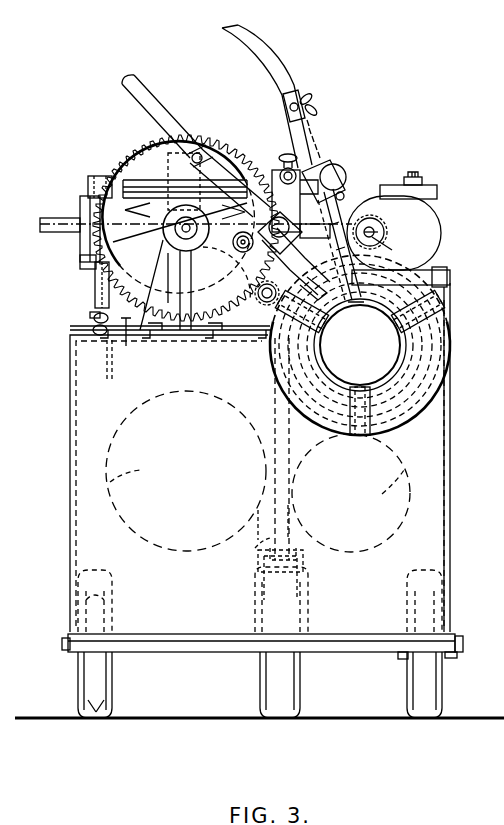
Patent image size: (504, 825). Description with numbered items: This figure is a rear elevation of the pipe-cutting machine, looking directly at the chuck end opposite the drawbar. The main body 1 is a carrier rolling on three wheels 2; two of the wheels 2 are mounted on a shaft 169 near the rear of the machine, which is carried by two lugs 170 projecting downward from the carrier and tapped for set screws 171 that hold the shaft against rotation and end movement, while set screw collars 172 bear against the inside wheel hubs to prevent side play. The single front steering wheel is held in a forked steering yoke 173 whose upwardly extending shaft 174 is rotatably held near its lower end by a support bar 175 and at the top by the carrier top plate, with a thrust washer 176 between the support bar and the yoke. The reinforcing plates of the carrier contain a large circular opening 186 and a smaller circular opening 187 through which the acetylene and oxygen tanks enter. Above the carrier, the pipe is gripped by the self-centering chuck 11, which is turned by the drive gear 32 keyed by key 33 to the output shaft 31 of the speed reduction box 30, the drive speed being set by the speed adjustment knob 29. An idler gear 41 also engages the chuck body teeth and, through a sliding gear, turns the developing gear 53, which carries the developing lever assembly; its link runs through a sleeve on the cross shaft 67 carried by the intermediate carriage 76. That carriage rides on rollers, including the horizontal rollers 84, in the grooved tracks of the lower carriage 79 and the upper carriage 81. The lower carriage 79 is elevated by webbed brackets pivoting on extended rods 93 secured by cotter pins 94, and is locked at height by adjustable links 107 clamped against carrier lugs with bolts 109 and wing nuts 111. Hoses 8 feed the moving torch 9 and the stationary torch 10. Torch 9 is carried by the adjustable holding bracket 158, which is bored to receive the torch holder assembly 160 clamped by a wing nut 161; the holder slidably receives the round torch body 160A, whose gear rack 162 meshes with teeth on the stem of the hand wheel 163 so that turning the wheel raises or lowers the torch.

The main body 1 is at (450, 500).
The wheels 2 is at (112, 704).
The hoses 8 is at (165, 96).
The moving torch 9 is at (344, 192).
The stationary torch 10 is at (294, 233).
The self-centering chuck 11 is at (430, 396).
The speed adjustment knob 29 is at (412, 177).
The speed reduction box 30 is at (437, 202).
The output shaft 31 is at (392, 247).
The drive gear 32 is at (376, 222).
The key 33 is at (378, 232).
The idler gear 41 is at (256, 306).
The developing gear 53 is at (118, 160).
The cross shaft 67 is at (52, 232).
The intermediate carriage 76 is at (80, 210).
The lower carriage 79 is at (95, 280).
The upper carriage 81 is at (94, 176).
The rollers 84 is at (80, 257).
The extended rods 93 is at (94, 330).
The cotter pins 94 is at (88, 319).
The adjustable links 107 is at (112, 378).
The bolts 109 is at (126, 341).
The wing nuts 111 is at (100, 313).
The adjustable holding bracket 158 is at (268, 165).
The torch holder assembly 160 is at (322, 164).
The round torch body 160A is at (308, 110).
The wing nut 161 is at (343, 194).
The gear rack 162 is at (311, 132).
The hand wheel 163 is at (342, 168).
The shaft 169 is at (212, 652).
The lugs 170 is at (460, 640).
The set screw 171 is at (455, 656).
The set screw collars 172 is at (400, 659).
The forked steering yoke 173 is at (308, 592).
The shaft 174 is at (262, 512).
The support bar 175 is at (255, 556).
The thrust washer 176 is at (302, 562).
The large circular opening 186 is at (186, 471).
The smaller circular opening 187 is at (351, 493).